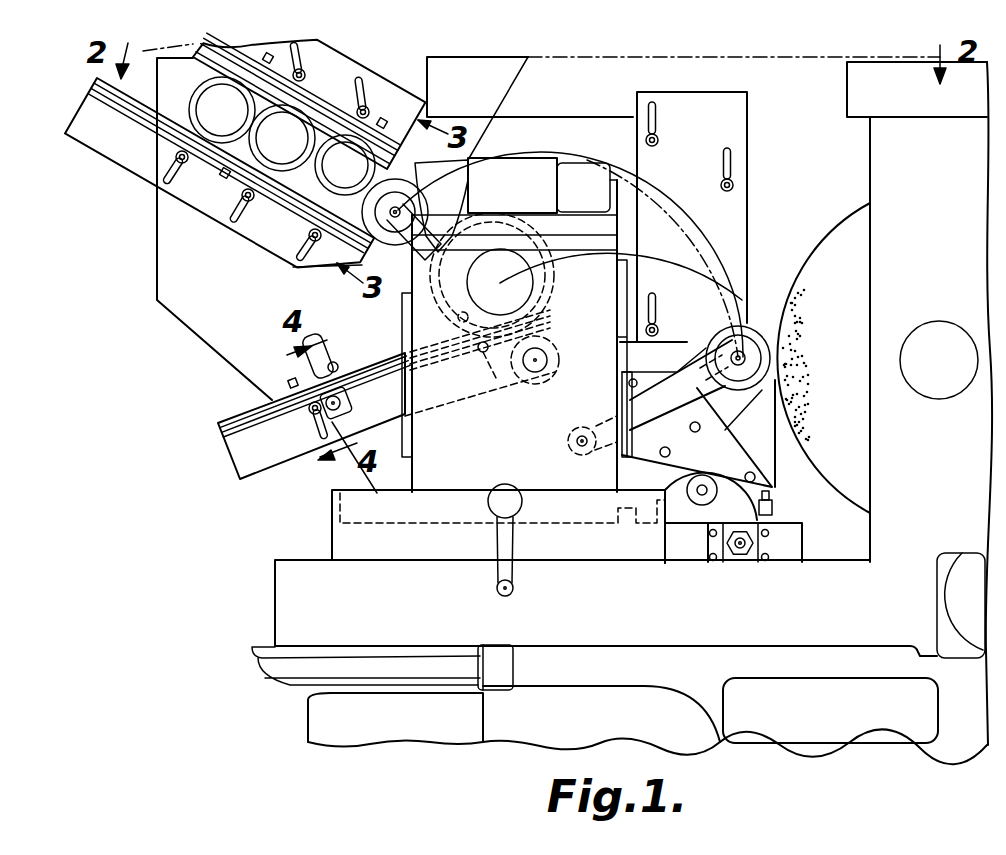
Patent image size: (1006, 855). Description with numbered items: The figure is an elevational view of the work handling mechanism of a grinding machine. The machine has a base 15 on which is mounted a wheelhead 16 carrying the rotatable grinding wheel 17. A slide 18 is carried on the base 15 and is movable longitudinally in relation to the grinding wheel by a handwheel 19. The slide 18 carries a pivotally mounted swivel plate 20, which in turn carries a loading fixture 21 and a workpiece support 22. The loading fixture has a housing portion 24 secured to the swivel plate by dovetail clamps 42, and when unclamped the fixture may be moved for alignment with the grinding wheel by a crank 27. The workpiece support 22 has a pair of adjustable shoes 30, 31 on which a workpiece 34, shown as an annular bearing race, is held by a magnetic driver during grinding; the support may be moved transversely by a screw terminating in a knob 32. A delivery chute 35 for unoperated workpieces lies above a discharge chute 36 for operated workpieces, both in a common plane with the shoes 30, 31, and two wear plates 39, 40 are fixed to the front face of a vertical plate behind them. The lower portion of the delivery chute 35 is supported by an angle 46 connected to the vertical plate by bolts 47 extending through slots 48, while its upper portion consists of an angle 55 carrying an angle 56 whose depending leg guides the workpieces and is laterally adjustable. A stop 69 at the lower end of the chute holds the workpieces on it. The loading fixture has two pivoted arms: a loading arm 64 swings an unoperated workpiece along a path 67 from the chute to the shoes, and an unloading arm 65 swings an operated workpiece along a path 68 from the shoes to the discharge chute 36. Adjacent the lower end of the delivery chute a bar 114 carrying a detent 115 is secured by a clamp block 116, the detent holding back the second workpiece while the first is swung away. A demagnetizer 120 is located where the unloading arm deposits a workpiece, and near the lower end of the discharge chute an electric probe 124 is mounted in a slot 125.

The base 15 is at (266, 668).
The wheelhead 16 is at (868, 155).
The grinding wheel 17 is at (826, 236).
The slide 18 is at (274, 580).
The handwheel 19 is at (975, 553).
The swivel plate 20 is at (332, 505).
The loading fixture 21 is at (411, 478).
The workpiece support 22 is at (633, 370).
The housing portion 24 is at (497, 430).
The crank 27 is at (496, 538).
The shoe 30 is at (682, 385).
The shoe 31 is at (767, 398).
The knob 32 is at (702, 498).
The workpiece 34 is at (750, 328).
The delivery chute 35 is at (82, 109).
The discharge chute 36 is at (222, 451).
The wear plate 39 is at (233, 296).
The wear plate 40 is at (676, 176).
The dovetail clamps 42 is at (350, 497).
The angle 46 is at (120, 160).
The bolts 47 is at (251, 199).
The slots 48 is at (238, 208).
The angle 55 is at (404, 92).
The angle 56 is at (218, 65).
The loading arm 64 is at (472, 267).
The unloading arm 65 is at (606, 414).
The path 67 is at (522, 153).
The path 68 is at (648, 277).
The stop 69 is at (398, 288).
The bar 114 is at (432, 168).
The detent 115 is at (378, 180).
The clamp block 116 is at (448, 203).
The demagnetizer 120 is at (558, 310).
The electric probe 124 is at (331, 356).
The slot 125 is at (311, 336).